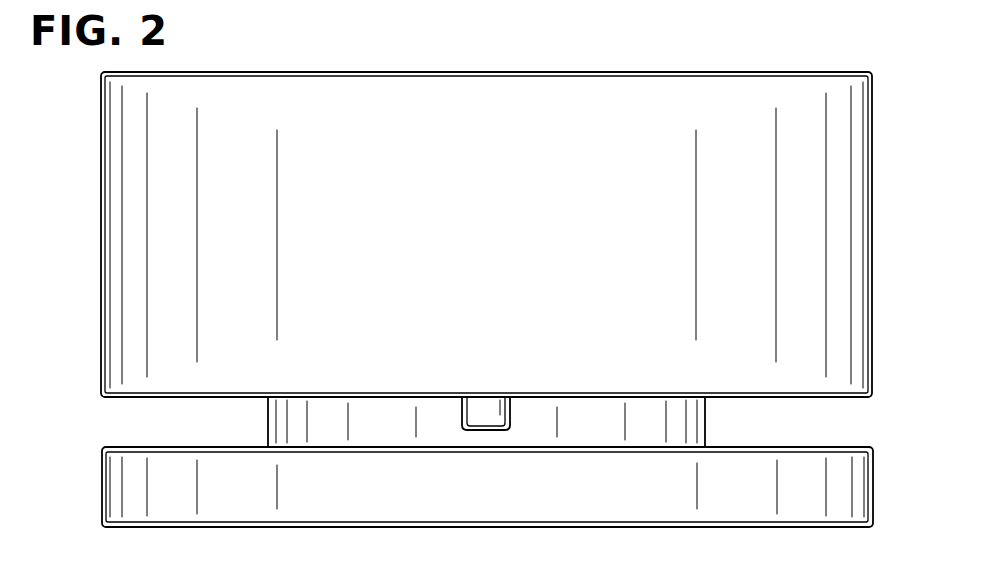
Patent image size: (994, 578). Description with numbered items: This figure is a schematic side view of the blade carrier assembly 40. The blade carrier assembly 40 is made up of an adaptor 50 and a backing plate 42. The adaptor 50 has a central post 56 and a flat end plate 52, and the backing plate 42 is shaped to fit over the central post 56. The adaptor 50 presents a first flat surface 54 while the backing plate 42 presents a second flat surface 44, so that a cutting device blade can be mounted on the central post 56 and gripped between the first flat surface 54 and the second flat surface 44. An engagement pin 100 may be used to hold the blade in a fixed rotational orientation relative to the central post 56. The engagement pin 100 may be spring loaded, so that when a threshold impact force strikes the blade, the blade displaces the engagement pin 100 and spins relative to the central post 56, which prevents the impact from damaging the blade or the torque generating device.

The blade carrier assembly 40 is at (872, 153).
The backing plate 42 is at (637, 92).
The second flat surface 44 is at (147, 397).
The adaptor 50 is at (873, 493).
The flat end plate 52 is at (652, 500).
The first flat surface 54 is at (832, 447).
The central post 56 is at (392, 432).
The engagement pin 100 is at (497, 430).